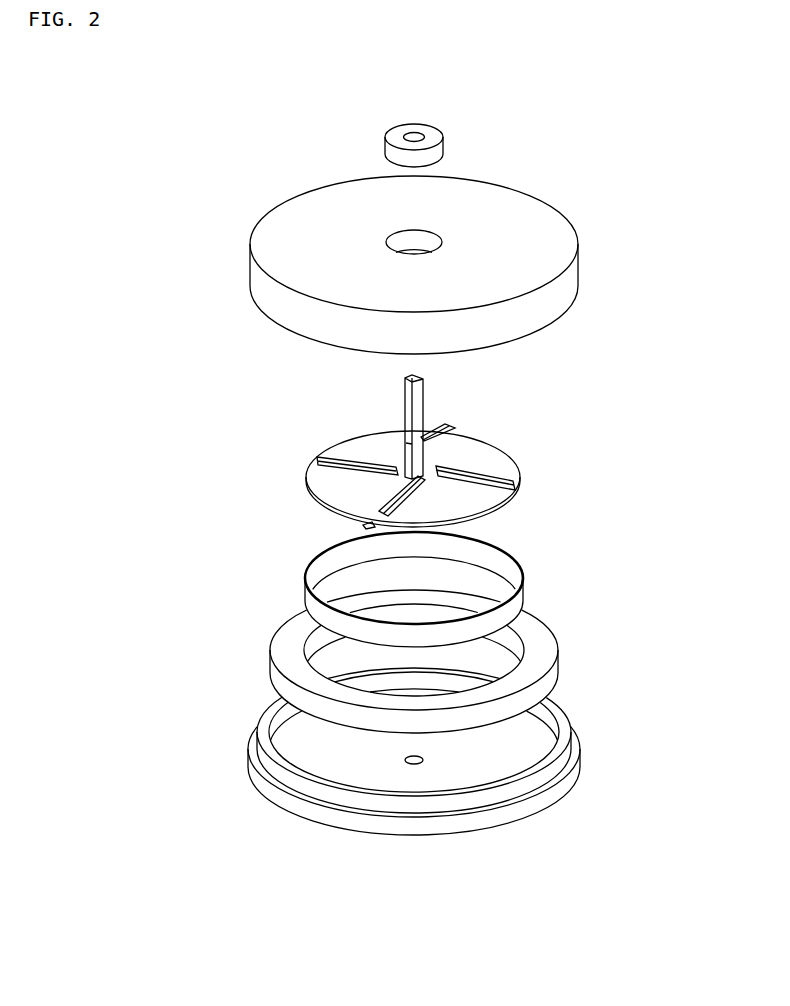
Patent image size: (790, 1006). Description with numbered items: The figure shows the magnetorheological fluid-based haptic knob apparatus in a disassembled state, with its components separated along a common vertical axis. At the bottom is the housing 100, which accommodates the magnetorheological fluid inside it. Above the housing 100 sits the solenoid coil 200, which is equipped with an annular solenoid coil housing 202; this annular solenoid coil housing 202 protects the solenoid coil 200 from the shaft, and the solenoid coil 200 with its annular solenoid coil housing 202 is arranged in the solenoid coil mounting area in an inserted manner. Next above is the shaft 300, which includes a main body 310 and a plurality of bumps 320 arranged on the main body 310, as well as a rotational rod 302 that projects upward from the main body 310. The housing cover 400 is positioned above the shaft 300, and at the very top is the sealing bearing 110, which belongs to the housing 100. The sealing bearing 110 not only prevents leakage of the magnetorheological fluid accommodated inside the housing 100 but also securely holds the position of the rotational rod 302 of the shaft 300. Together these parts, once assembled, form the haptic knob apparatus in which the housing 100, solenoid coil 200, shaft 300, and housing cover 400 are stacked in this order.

The sealing bearing 110 is at (433, 132).
The housing cover 400 is at (547, 217).
The rotational rod 302 is at (403, 395).
The bumps 320 is at (337, 460).
The main body 310 is at (508, 467).
The shaft 300 is at (498, 437).
The annular solenoid coil housing 202 is at (517, 570).
The solenoid coil 200 is at (545, 640).
The housing 100 is at (565, 725).